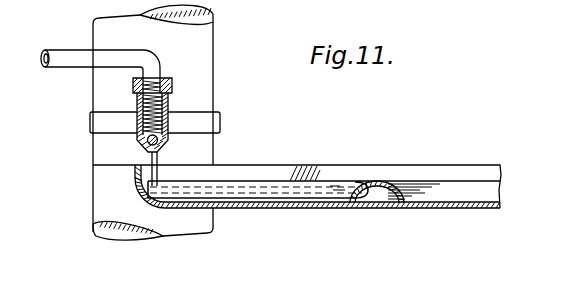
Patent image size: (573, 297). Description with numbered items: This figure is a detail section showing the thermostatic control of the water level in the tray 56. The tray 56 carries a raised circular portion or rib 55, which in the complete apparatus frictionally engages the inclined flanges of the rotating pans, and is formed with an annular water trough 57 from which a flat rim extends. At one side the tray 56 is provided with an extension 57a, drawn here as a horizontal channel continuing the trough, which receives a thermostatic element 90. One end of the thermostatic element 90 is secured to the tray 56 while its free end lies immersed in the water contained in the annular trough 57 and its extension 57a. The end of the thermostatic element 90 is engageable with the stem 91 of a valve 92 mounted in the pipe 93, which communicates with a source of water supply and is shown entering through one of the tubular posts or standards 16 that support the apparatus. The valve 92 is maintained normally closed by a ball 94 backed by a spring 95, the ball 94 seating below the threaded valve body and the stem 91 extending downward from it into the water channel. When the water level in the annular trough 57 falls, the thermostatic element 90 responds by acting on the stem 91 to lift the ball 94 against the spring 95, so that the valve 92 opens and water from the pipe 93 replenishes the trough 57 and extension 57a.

The tubular post or standard 16 is at (93, 165).
The pipe 93 is at (69, 67).
The spring 95 is at (167, 108).
The valve 92 is at (145, 140).
The ball 94 is at (159, 143).
The stem 91 is at (142, 171).
The tray 56 is at (467, 208).
The annular water trough 57 is at (291, 182).
The extension 57a is at (251, 208).
The thermostatic element 90 is at (266, 193).
The raised circular portion or rib 55 is at (373, 181).